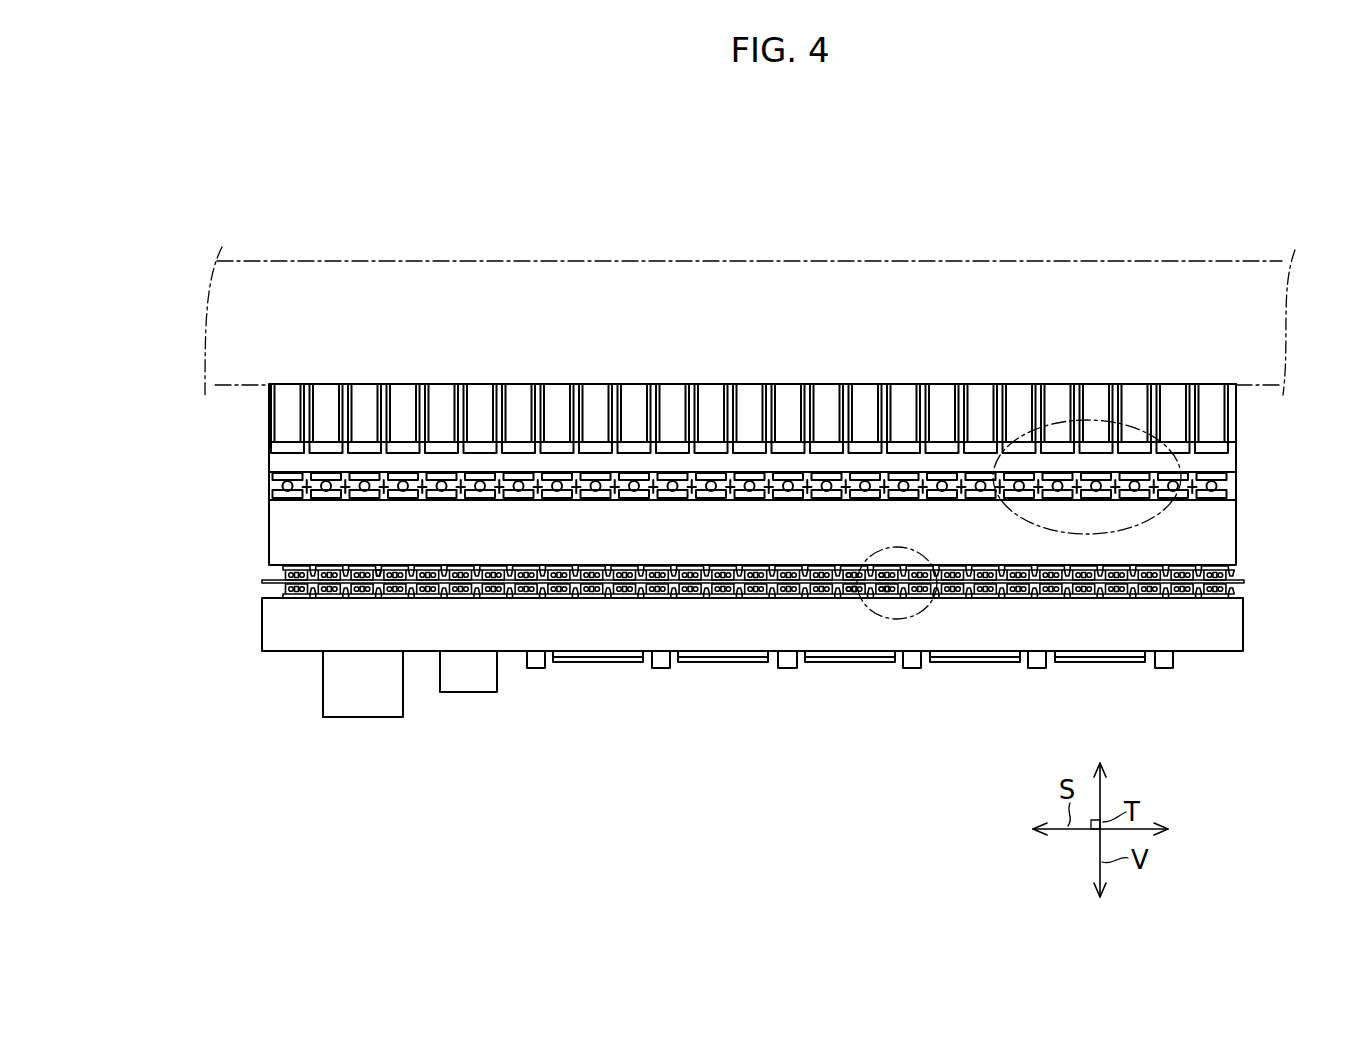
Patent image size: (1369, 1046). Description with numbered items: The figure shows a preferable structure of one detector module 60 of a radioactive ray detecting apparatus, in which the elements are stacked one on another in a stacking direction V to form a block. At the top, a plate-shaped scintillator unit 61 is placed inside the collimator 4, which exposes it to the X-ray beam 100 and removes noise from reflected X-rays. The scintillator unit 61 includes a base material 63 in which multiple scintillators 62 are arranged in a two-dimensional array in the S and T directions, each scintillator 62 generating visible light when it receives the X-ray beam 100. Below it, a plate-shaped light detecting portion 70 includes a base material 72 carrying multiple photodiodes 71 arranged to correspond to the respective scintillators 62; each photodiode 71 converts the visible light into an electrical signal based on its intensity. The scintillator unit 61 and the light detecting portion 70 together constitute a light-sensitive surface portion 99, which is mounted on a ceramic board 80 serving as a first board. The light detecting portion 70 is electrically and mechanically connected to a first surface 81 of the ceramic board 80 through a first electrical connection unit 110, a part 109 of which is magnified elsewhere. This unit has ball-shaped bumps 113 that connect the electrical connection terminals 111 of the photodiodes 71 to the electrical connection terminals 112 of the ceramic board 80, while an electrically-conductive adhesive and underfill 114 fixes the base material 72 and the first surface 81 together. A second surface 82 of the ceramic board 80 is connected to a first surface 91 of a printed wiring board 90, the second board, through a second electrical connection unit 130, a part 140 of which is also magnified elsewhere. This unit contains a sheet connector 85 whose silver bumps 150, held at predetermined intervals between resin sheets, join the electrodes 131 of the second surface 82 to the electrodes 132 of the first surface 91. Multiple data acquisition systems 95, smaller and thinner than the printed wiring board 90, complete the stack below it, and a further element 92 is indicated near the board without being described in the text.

The collimator 4 is at (948, 258).
The detector module 60 is at (1086, 226).
The scintillator unit 61 is at (738, 377).
The scintillator 62 is at (298, 392).
The base material 63 is at (1237, 415).
The light detecting portion 70 is at (734, 432).
The photodiode 71 is at (318, 452).
The base material 72 is at (1237, 462).
The ceramic board 80 is at (699, 440).
The first surface 81 is at (912, 519).
The second surface 82 is at (275, 571).
The sheet connector 85 is at (378, 575).
The printed wiring board 90 is at (262, 630).
The first surface 91 is at (275, 595).
The electronic component 92 is at (282, 656).
The data acquisition system 95 is at (598, 662).
The light-sensitive surface portion 99 is at (714, 431).
The X-ray beam 100 is at (664, 210).
The part of the first electrical connection unit 109 is at (995, 448).
The first electrical connection unit 110 is at (808, 438).
The electrical connection terminal 111 is at (480, 474).
The electrical connection terminal 112 is at (484, 500).
The bump 113 is at (490, 488).
The electrically-conductive adhesive and underfill 114 is at (388, 487).
The second electrical connection unit 130 is at (1247, 582).
The electrode 131 is at (875, 575).
The electrode 132 is at (858, 598).
The part of the second electrical connection unit 140 is at (915, 622).
The silver bump 150 is at (878, 592).